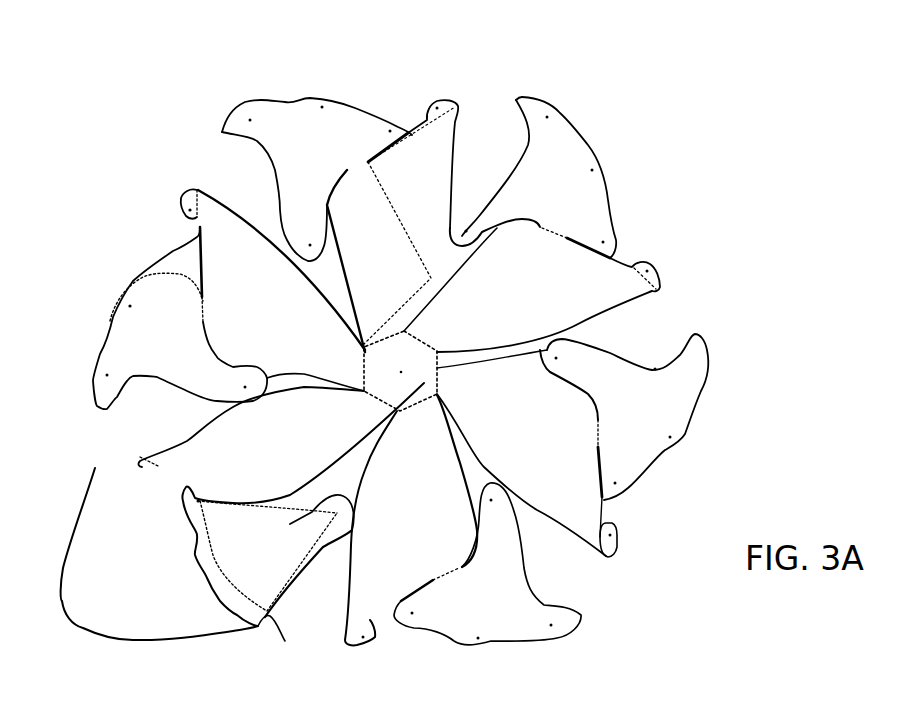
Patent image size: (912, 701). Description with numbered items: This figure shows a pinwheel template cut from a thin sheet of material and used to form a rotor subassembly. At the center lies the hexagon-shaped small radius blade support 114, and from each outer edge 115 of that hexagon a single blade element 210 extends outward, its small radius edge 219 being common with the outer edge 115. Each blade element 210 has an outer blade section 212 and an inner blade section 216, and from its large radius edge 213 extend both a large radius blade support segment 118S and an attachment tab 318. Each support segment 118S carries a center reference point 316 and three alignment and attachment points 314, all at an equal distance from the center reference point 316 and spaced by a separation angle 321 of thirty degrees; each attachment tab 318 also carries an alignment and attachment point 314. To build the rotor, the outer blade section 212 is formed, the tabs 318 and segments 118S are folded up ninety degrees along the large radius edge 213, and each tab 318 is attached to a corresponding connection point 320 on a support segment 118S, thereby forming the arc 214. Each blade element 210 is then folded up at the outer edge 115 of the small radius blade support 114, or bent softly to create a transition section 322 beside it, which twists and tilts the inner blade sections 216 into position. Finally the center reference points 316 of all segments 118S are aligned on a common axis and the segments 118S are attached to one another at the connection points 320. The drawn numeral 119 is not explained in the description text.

The small radius blade support 114 is at (386, 374).
The outer edge 115 is at (440, 373).
The large radius blade support segment 118S is at (304, 165).
The flap panel 119 is at (112, 322).
The single blade element 210 is at (487, 411).
The outer blade section 212 is at (430, 175).
The large radius edge 213 is at (600, 432).
The arc 214 is at (140, 277).
The inner blade section 216 is at (369, 228).
The small radius edge 219 is at (440, 366).
The alignment and attachment point 314 is at (545, 116).
The center reference point 316 is at (466, 230).
The attachment tab 318 is at (190, 204).
The connection point 320 is at (148, 244).
The separation angle 321 is at (222, 556).
The transition section 322 is at (392, 318).